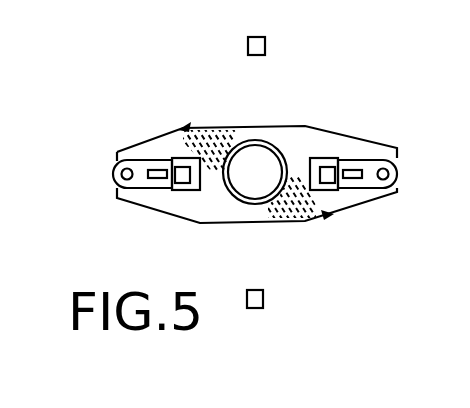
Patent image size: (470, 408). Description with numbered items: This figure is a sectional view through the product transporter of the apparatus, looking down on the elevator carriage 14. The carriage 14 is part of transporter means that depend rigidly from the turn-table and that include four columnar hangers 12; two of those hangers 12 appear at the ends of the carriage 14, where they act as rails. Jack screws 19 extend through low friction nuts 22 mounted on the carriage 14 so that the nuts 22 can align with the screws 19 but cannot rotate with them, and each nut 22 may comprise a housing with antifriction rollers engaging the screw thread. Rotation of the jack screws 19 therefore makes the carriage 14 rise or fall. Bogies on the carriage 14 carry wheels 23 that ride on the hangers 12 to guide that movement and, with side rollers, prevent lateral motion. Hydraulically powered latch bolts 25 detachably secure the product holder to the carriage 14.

The columnar hanger 12 is at (337, 162).
The elevator carriage 14 is at (337, 200).
The jack screw 19 is at (114, 165).
The low friction nut 22 is at (115, 183).
The wheel 23 is at (157, 168).
The hydraulically powered latch bolt 25 is at (212, 145).